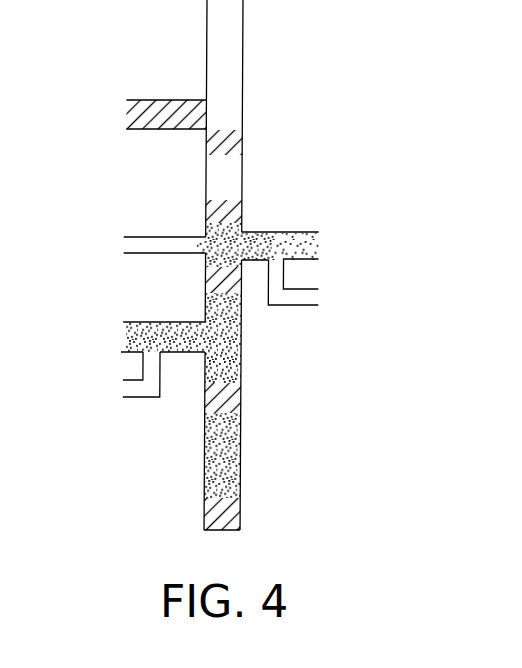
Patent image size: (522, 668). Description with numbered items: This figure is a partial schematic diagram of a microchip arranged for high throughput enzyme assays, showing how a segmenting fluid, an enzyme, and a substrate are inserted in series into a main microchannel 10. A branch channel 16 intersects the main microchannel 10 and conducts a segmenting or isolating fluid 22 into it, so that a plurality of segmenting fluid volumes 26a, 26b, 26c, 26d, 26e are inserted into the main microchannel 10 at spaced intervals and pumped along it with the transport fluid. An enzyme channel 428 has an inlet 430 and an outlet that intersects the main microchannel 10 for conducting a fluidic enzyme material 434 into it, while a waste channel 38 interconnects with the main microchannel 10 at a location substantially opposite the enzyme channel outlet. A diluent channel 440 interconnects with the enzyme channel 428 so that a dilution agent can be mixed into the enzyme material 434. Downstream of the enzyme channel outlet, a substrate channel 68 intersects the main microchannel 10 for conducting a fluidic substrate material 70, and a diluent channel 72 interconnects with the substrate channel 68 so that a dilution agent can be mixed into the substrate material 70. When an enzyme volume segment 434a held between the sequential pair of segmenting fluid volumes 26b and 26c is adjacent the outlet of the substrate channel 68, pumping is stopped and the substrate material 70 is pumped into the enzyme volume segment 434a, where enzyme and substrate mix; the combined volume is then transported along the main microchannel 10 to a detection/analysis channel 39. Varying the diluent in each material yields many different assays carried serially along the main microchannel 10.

The main microchannel 10 is at (243, 65).
The branch channel 16 is at (167, 100).
The segmenting or isolating fluid 22 is at (150, 110).
The segmenting fluid volume 26a is at (233, 139).
The segmenting fluid volume 26b is at (207, 220).
The segmenting fluid volume 26c is at (210, 278).
The segmenting fluid volume 26d is at (242, 397).
The segmenting fluid volume 26e is at (233, 510).
The waste channel 38 is at (162, 237).
The detection/analysis channel 39 is at (227, 462).
The substrate channel 68 is at (152, 321).
The fluidic substrate material 70 is at (130, 330).
The diluent channel 72 is at (147, 397).
The enzyme channel 428 is at (305, 232).
The inlet 430 is at (315, 260).
The fluidic enzyme material 434 is at (258, 232).
The enzyme volume segment 434a is at (242, 360).
The diluent channel 440 is at (290, 307).